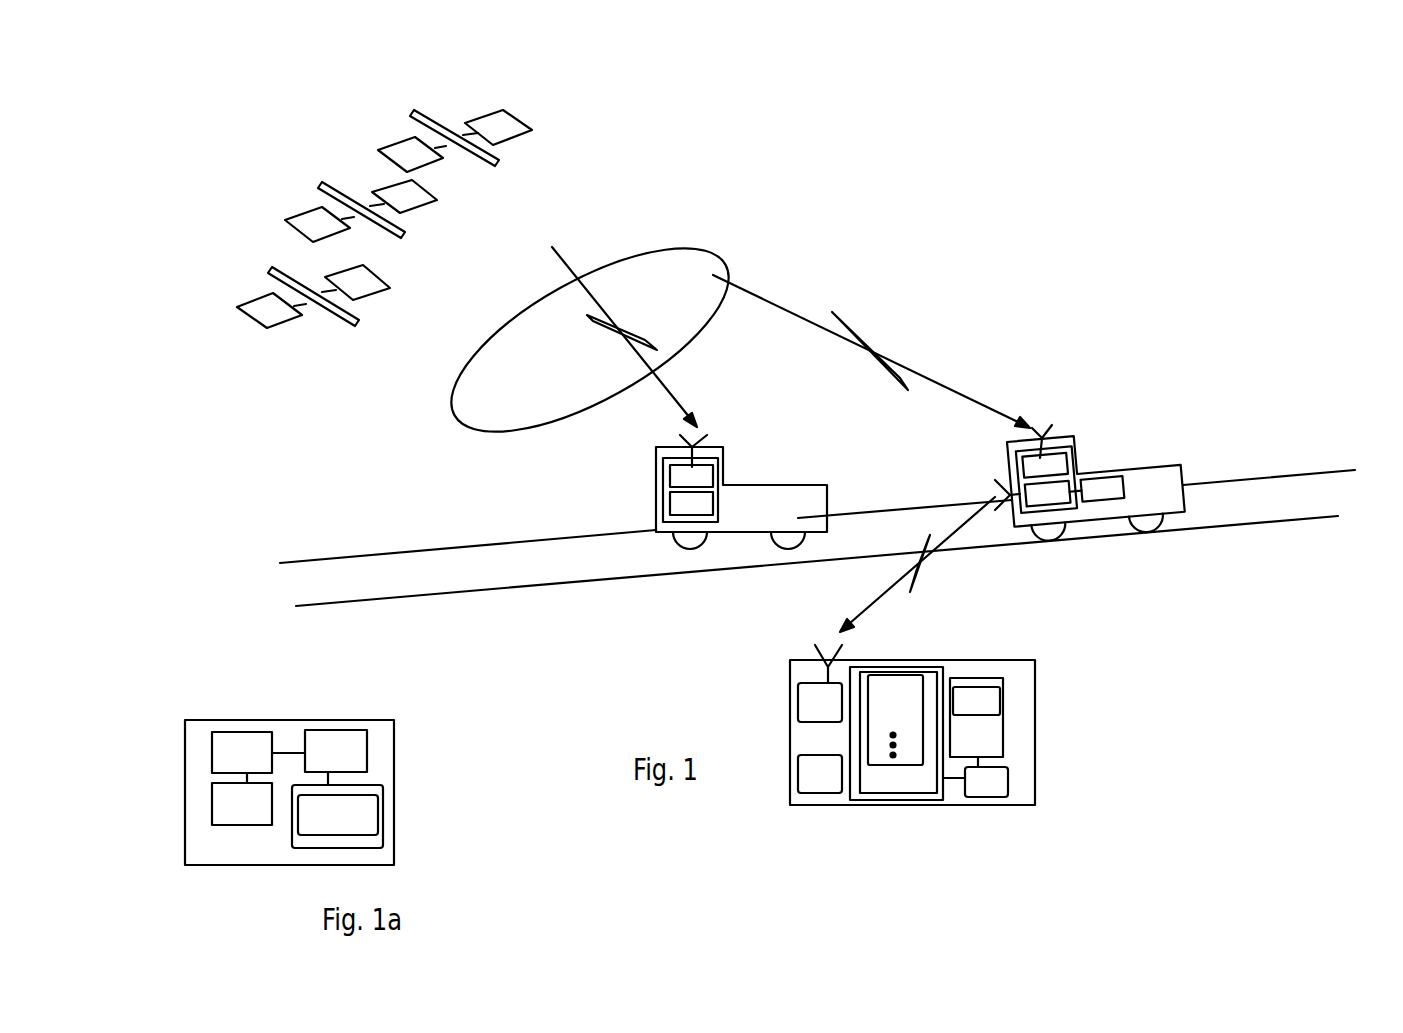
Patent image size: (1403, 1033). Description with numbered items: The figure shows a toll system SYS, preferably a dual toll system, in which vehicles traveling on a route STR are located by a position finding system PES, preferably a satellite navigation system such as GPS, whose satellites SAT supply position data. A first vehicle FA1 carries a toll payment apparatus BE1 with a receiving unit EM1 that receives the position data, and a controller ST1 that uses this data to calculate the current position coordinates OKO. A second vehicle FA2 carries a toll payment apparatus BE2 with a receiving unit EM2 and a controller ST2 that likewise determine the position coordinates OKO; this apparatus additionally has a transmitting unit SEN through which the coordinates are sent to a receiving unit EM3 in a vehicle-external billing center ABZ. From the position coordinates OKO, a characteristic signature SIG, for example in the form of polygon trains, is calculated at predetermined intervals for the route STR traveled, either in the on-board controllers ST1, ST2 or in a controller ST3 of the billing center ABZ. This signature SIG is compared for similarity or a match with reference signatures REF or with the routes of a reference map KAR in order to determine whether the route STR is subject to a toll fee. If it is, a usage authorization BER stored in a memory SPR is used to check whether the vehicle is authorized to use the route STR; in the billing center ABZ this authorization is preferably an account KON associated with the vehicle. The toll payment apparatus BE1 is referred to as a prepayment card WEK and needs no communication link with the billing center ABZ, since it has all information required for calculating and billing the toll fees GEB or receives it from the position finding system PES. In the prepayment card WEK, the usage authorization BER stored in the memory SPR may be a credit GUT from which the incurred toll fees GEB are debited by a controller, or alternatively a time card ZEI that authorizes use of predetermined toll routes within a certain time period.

In FIG. 1, the satellites SAT is at (517, 137).
In FIG. 1, the toll system SYS is at (1066, 229).
In FIG. 1, the position finding system PES is at (727, 339).
In FIG. 1, the route STR is at (1223, 500).
In FIG. 1, the position coordinates OKO is at (866, 417).
In FIG. 1, the vehicle FA1 is at (738, 539).
In FIG. 1, the vehicle FA2 is at (1096, 493).
In FIG. 1, the toll payment apparatus BE1 is at (681, 545).
In FIG. 1, the toll payment apparatus BE2 is at (1070, 477).
In FIG. 1, the receiving unit EM1 is at (691, 476).
In FIG. 1, the controller ST1 is at (691, 503).
In FIG. 1A, the controller ST1 is at (242, 752).
In FIG. 1, the receiving unit EM2 is at (1045, 466).
In FIG. 1, the transmitting unit SEN is at (1048, 494).
In FIG. 1, the controller ST2 is at (1103, 489).
In FIG. 1, the characteristic signature SIG is at (930, 556).
In FIG. 1A, the characteristic signature SIG is at (242, 804).
In FIG. 1, the receiving unit EM3 is at (820, 702).
In FIG. 1, the controller ST3 is at (820, 774).
In FIG. 1, the memory SPR is at (813, 705).
In FIG. 1A, the memory SPR is at (376, 848).
In FIG. 1, the usage authorization BER is at (900, 701).
In FIG. 1A, the usage authorization BER is at (366, 811).
In FIG. 1, the account KON is at (895, 720).
In FIG. 1, the time card ZEI is at (895, 719).
In FIG. 1, the billing center ABZ is at (1015, 684).
In FIG. 1, the reference signatures REF is at (976, 701).
In FIG. 1, the reference map KAR is at (988, 723).
In FIG. 1, the toll fees GEB is at (975, 777).
In FIG. 1A, the toll fees GEB is at (336, 751).
In FIG. 1A, the prepayment card WEK is at (321, 788).
In FIG. 1A, the credit GUT is at (332, 820).